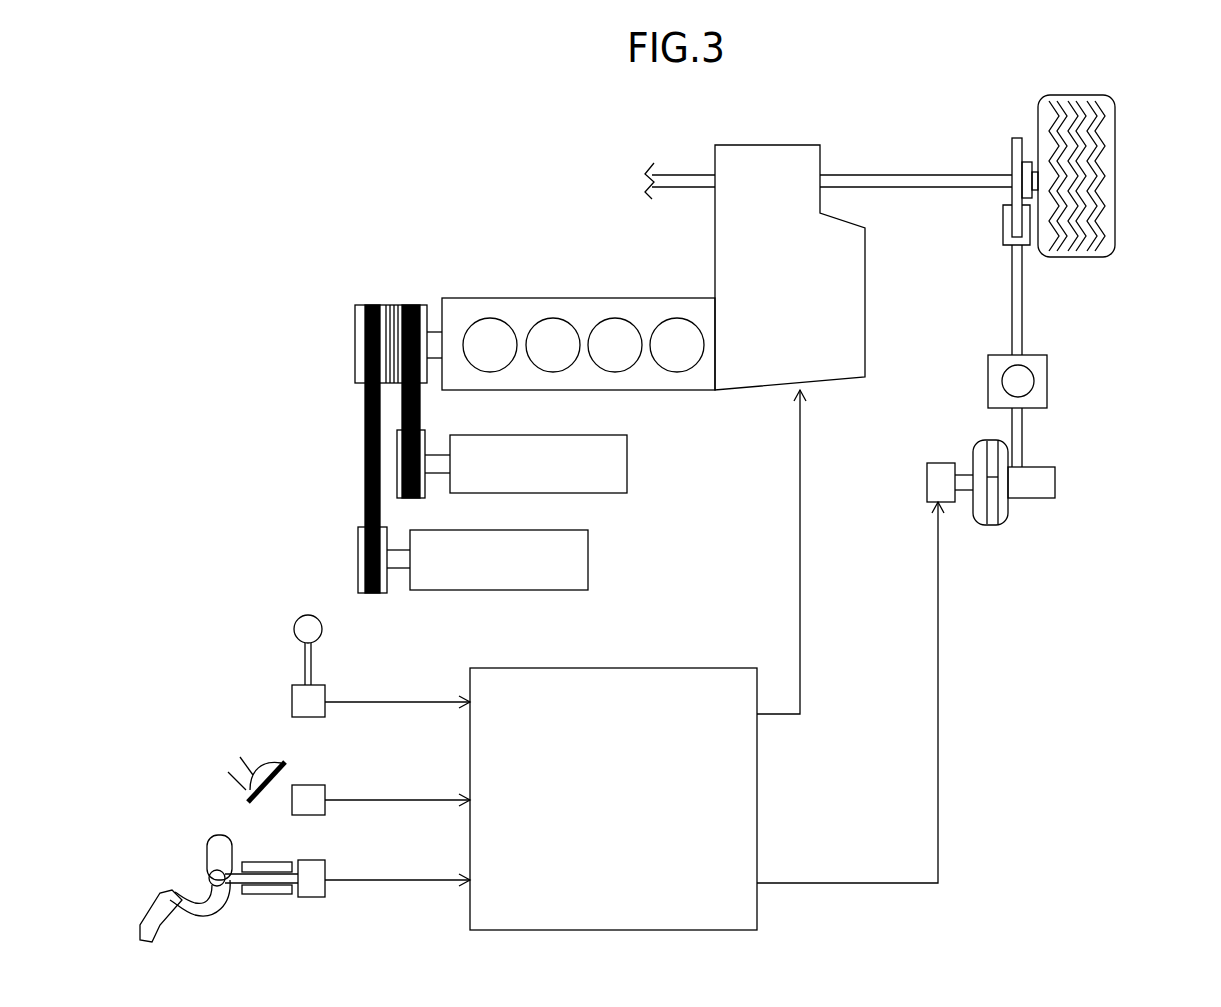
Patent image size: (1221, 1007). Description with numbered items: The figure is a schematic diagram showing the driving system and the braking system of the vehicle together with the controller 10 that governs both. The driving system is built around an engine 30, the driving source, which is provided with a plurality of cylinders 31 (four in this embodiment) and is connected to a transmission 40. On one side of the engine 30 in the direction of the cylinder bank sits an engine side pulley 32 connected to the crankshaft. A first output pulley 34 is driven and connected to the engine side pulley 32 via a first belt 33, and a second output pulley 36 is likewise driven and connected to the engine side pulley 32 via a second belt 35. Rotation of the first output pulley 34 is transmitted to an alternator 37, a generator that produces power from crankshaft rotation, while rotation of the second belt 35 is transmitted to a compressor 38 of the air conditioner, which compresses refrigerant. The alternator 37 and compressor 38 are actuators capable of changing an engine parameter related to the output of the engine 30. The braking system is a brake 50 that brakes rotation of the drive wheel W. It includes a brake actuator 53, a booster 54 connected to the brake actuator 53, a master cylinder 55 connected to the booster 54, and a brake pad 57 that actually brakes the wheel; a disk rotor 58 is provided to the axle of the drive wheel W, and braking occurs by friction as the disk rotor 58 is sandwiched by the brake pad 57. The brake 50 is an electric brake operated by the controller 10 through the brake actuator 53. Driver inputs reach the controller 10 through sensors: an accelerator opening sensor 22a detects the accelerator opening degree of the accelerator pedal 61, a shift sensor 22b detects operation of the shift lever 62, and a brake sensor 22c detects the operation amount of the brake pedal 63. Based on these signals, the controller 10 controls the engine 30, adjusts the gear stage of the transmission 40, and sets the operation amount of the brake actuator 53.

The controller 10 is at (670, 668).
The engine 30 is at (328, 330).
The cylinders 31 is at (490, 318).
The engine side pulley 32 is at (384, 305).
The first belt 33 is at (421, 416).
The first output pulley 34 is at (425, 490).
The second belt 35 is at (365, 437).
The second output pulley 36 is at (358, 555).
The alternator 37 is at (627, 464).
The compressor 38 is at (588, 562).
The transmission 40 is at (865, 318).
The brake 50 is at (1047, 433).
The brake actuator 53 is at (925, 478).
The booster 54 is at (1003, 518).
The master cylinder 55 is at (1058, 478).
The brake pad 57 is at (1003, 222).
The disk rotor 58 is at (1012, 155).
The drive wheel W is at (1118, 170).
The accelerator pedal 61 is at (290, 767).
The shift lever 62 is at (325, 628).
The brake pedal 63 is at (215, 920).
The accelerator opening sensor 22a is at (325, 812).
The shift sensor 22b is at (292, 700).
The brake sensor 22c is at (325, 895).